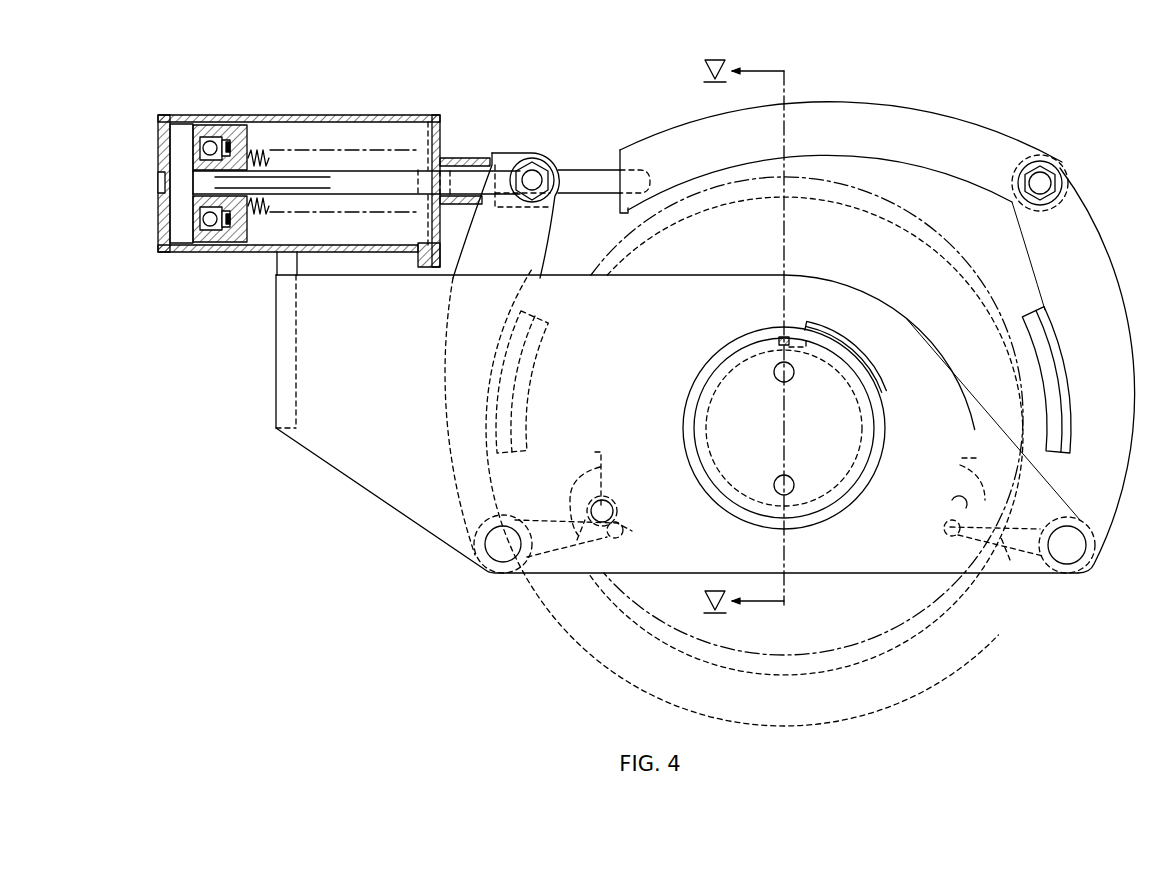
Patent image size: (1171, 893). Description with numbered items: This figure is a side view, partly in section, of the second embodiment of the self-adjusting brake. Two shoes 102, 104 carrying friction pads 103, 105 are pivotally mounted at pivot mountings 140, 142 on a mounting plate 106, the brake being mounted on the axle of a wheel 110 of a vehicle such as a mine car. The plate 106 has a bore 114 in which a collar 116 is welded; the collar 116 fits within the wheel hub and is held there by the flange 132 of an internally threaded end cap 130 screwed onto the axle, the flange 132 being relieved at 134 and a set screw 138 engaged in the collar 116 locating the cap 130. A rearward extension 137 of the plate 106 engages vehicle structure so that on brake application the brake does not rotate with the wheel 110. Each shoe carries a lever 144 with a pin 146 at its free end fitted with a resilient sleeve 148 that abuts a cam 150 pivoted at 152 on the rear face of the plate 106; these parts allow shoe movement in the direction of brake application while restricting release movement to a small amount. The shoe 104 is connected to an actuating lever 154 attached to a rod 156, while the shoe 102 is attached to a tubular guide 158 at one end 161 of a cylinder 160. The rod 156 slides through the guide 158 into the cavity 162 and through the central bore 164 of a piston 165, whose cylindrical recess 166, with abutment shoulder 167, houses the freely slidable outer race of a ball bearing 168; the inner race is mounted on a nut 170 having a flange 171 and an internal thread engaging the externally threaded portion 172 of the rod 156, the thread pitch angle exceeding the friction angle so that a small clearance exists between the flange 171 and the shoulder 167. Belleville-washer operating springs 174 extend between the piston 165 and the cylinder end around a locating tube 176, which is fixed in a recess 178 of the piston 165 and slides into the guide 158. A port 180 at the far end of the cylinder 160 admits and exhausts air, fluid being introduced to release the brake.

The shoe 102 is at (433, 428).
The friction pad 103 is at (532, 351).
The shoe 104 is at (1111, 252).
The friction pad 105 is at (1062, 433).
The mounting plate 106 is at (824, 560).
The wheel 110 is at (1000, 637).
The bore 114 is at (887, 404).
The collar 116 is at (795, 337).
The end cap 130 is at (745, 375).
The flange 132 is at (703, 388).
The relief 134 is at (808, 340).
The rearward extension 137 is at (292, 364).
The set screw 138 is at (781, 336).
The pivot mounting 140 is at (497, 549).
The pivot mounting 142 is at (1069, 566).
The lever 144 is at (577, 540).
The pin 146 is at (626, 538).
The sleeve 148 is at (634, 531).
The cam 150 is at (604, 479).
The pivot 152 is at (608, 507).
The actuating lever 154 is at (912, 124).
The rod 156 is at (576, 170).
The tubular guide 158 is at (494, 166).
The cylinder 160 is at (440, 116).
The end of cylinder 161 is at (397, 239).
The cavity 162 is at (373, 151).
The central bore 164 is at (232, 255).
The piston 165 is at (247, 135).
The cylindrical recess 166 is at (237, 140).
The abutment shoulder 167 is at (250, 158).
The ball bearing 168 is at (205, 140).
The nut 170 is at (190, 236).
The flange 171 is at (215, 232).
The externally threaded portion 172 is at (285, 183).
The operating springs 174 is at (278, 153).
The locating tube 176 is at (395, 168).
The recess 178 is at (262, 157).
The port 180 is at (168, 118).